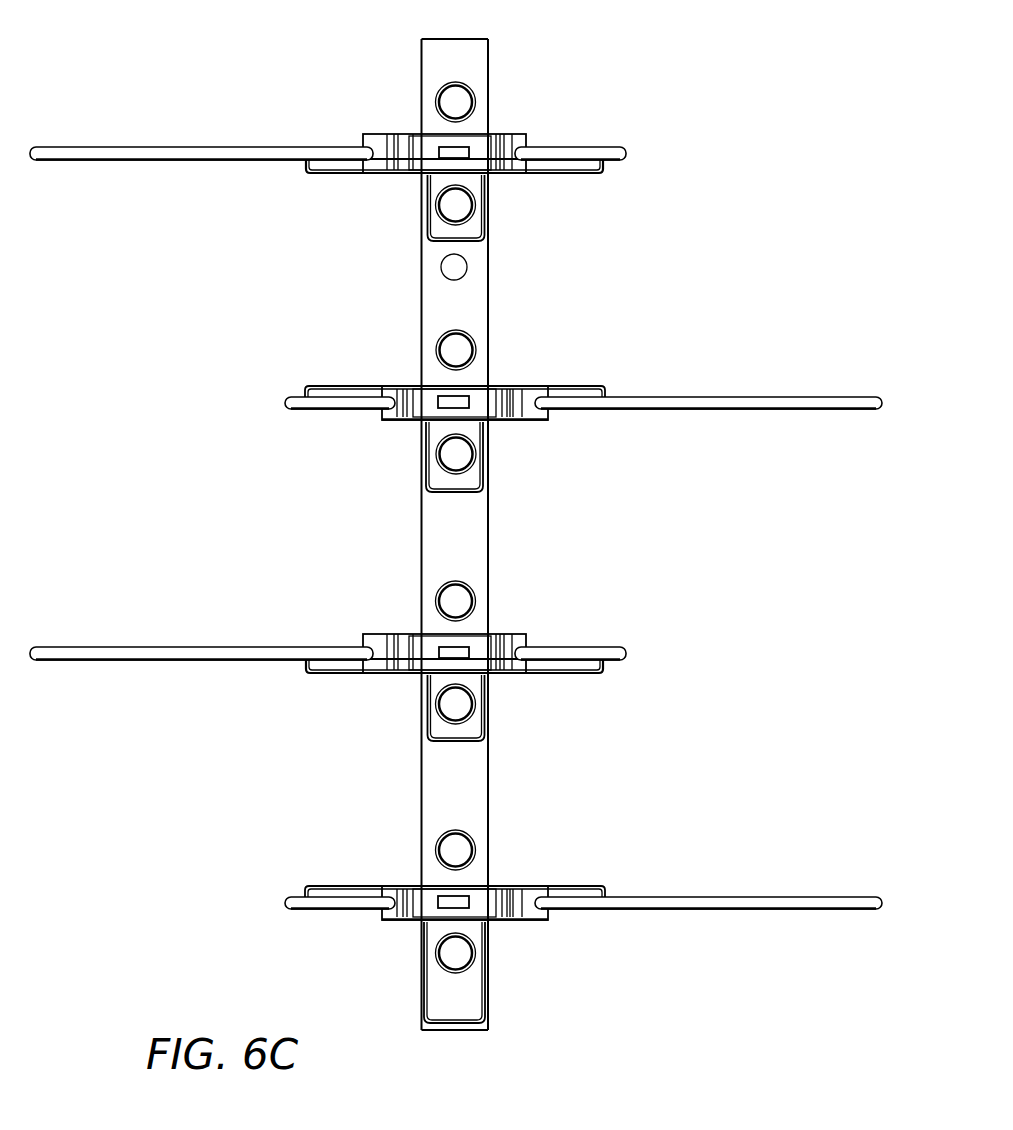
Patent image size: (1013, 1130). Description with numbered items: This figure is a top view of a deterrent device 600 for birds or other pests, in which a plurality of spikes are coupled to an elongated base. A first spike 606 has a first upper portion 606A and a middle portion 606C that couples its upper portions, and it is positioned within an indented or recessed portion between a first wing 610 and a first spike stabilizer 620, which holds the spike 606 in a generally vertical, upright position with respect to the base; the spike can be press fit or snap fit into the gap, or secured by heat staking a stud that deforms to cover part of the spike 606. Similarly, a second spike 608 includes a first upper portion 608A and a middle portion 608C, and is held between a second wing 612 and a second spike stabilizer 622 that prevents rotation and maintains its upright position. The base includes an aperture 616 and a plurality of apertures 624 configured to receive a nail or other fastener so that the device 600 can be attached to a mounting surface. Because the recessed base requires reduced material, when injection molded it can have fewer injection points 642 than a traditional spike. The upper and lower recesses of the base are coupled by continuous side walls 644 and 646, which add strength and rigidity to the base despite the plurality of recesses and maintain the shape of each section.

The deterrent device 600 is at (736, 548).
The first spike 606 is at (129, 165).
The first upper portion of first spike 606A is at (156, 147).
The middle portion of first spike 606C is at (613, 147).
The second spike 608 is at (802, 415).
The first upper portion of second spike 608A is at (297, 397).
The middle portion of second spike 608C is at (752, 397).
The first wing 610 is at (586, 173).
The second wing 612 is at (590, 385).
The aperture 616 is at (460, 101).
The first spike stabilizer 620 is at (377, 133).
The second spike stabilizer 622 is at (392, 422).
The aperture 624 is at (452, 205).
The injection point 642 is at (447, 268).
The continuous side wall 644 is at (489, 557).
The continuous side wall 646 is at (420, 530).